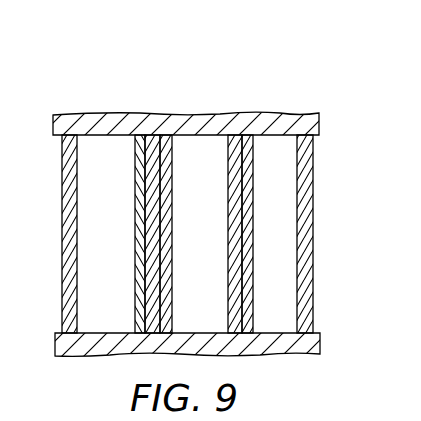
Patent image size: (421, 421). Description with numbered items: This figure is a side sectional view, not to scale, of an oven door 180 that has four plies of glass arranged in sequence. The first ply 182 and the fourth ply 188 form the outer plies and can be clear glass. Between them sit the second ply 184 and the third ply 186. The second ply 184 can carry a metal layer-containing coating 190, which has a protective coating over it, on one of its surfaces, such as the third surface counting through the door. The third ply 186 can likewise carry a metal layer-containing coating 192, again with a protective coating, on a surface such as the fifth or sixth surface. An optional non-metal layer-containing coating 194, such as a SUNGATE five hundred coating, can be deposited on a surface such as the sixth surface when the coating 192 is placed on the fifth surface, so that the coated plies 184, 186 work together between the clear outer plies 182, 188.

The oven door 180 is at (290, 92).
The first ply of glass 182 is at (303, 206).
The second ply of glass 184 is at (228, 312).
The third ply of glass 186 is at (134, 297).
The fourth ply of glass 188 is at (62, 230).
The metal layer-containing coating 190 is at (277, 272).
The metal layer-containing coating 192 is at (197, 189).
The non-metal layer-containing coating 194 is at (135, 209).